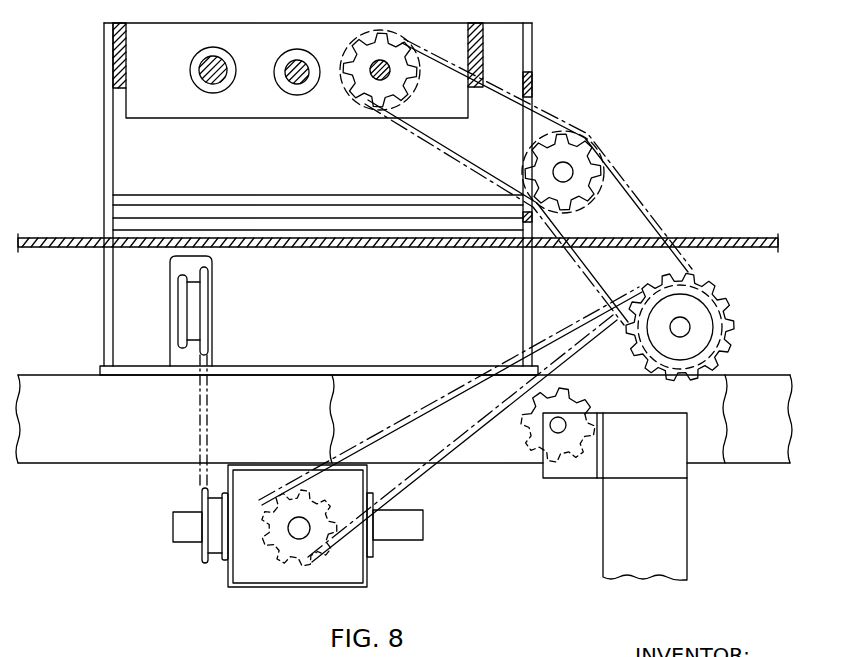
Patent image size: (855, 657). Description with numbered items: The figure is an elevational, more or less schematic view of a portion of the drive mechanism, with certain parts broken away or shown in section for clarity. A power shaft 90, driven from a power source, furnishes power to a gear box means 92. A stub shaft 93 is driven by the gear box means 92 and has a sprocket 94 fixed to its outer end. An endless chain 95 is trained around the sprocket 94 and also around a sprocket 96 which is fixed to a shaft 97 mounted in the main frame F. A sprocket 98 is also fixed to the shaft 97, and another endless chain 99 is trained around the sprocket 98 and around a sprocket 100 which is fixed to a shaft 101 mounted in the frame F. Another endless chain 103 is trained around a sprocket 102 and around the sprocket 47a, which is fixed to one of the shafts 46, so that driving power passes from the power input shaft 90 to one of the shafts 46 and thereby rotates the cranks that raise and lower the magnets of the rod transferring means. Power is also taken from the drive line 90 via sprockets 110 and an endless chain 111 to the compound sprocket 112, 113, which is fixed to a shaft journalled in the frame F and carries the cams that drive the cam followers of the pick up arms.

The shaft 46 is at (198, 88).
The sprocket 47a is at (366, 107).
The power shaft 90 is at (404, 540).
The gear box means 92 is at (242, 582).
The stub shaft 93 is at (303, 539).
The sprocket 94 is at (284, 561).
The endless chain 95 is at (427, 477).
The sprocket 96 is at (722, 288).
The shaft 97 is at (690, 323).
The sprocket 98 is at (718, 355).
The endless chain 99 is at (645, 215).
The sprocket 100 is at (577, 197).
The shaft 101 is at (571, 169).
The sprocket 102 is at (590, 141).
The endless chain 103 is at (547, 119).
The sprocket 110 is at (203, 550).
The endless chain 111 is at (205, 421).
The compound sprocket 112 is at (208, 307).
The compound sprocket 113 is at (178, 323).
The main frame F is at (80, 464).